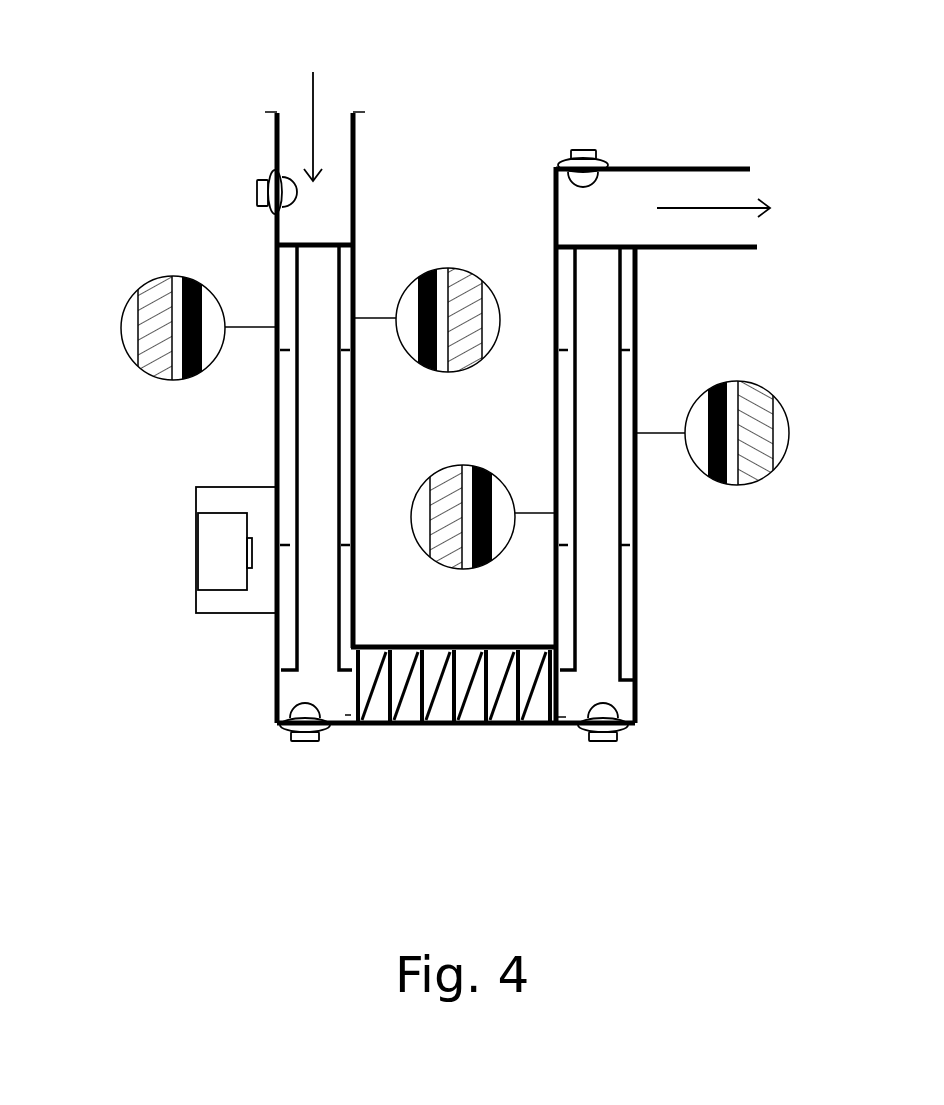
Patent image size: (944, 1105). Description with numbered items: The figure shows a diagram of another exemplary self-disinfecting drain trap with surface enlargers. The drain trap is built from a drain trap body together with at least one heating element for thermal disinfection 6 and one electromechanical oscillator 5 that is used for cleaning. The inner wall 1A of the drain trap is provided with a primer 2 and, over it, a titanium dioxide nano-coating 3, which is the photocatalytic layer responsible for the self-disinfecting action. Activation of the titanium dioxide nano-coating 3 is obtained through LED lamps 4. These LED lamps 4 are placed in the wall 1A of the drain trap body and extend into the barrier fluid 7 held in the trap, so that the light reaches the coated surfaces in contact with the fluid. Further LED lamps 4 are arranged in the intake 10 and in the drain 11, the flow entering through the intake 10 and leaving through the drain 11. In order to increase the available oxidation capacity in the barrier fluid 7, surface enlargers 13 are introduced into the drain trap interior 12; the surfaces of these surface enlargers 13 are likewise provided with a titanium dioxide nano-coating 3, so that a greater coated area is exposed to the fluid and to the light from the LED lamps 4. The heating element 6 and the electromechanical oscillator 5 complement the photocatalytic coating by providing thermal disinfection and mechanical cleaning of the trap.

The inner wall 1A is at (158, 333).
The primer 2 is at (142, 380).
The titanium dioxide nano-coating 3 is at (176, 280).
The LED lamps 4 is at (280, 192).
The electromechanical oscillator 5 is at (232, 552).
The heating element for thermal disinfection 6 is at (440, 690).
The barrier fluid 7 is at (597, 660).
The intake 10 is at (293, 130).
The drain 11 is at (600, 228).
The drain trap interior 12 is at (595, 275).
The surface enlargers 13 is at (617, 405).